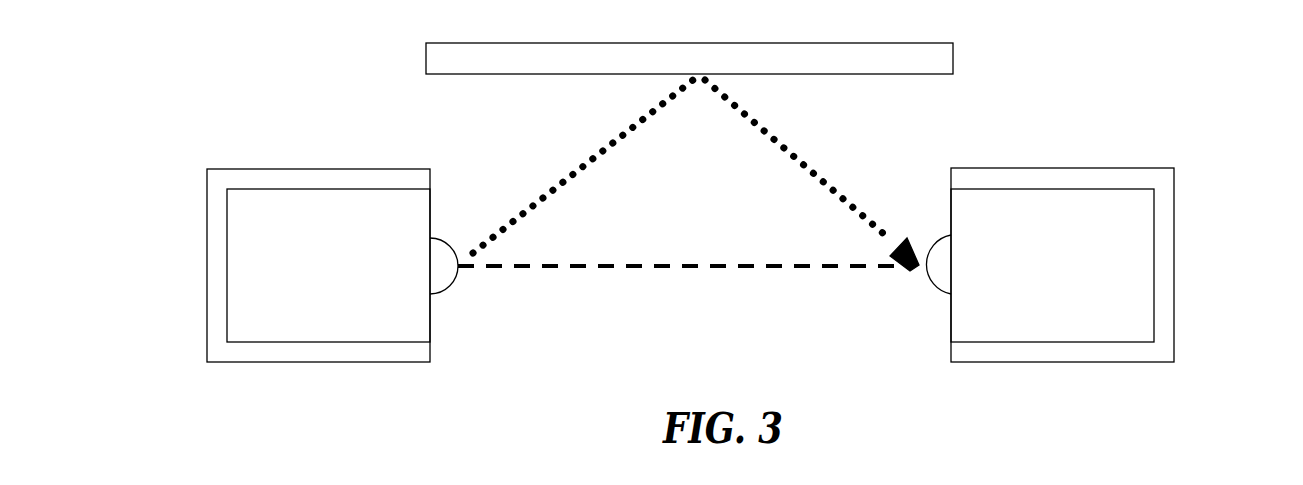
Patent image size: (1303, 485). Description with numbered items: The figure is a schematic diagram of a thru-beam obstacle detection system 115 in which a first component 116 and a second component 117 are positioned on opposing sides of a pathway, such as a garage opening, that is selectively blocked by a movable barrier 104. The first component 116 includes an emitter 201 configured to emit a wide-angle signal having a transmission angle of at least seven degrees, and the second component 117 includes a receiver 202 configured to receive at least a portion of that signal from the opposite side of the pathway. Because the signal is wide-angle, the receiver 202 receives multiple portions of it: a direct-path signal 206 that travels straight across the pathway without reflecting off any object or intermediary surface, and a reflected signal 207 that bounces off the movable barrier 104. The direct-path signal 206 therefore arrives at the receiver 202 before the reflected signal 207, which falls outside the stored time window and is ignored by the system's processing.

The obstacle detection system 115 is at (288, 41).
The movable barrier 104 is at (953, 55).
The first component 116 is at (299, 237).
The second component 117 is at (1091, 237).
The emitter 201 is at (227, 245).
The receiver 202 is at (1154, 237).
The direct-path signal 206 is at (730, 255).
The reflected signal 207 is at (800, 147).